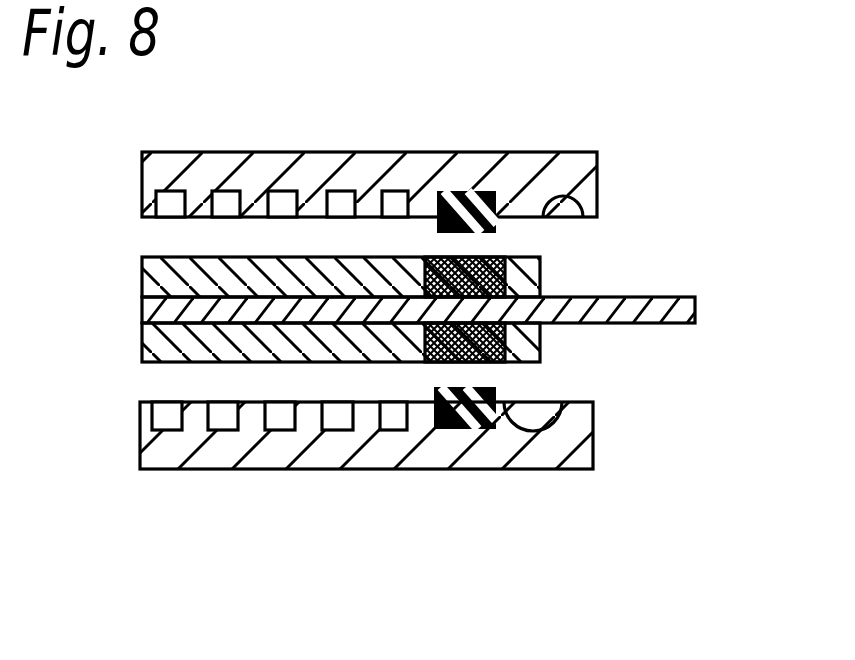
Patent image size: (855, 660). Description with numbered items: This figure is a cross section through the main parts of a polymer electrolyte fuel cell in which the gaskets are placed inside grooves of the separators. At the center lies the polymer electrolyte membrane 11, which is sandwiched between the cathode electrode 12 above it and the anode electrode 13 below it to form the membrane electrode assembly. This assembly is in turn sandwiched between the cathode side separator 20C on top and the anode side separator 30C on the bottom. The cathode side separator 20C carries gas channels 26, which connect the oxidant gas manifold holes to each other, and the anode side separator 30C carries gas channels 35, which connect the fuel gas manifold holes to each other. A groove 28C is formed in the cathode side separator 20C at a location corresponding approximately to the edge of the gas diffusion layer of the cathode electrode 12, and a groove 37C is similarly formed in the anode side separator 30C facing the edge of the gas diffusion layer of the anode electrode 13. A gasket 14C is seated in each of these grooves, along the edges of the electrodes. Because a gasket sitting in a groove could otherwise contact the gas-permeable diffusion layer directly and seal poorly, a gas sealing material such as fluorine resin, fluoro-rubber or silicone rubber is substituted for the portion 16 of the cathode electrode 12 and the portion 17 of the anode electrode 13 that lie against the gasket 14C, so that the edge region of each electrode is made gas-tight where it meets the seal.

The polymer electrolyte membrane 11 is at (665, 300).
The cathode electrode 12 is at (330, 258).
The anode electrode 13 is at (325, 352).
The gasket 14C is at (469, 196).
The portion of the cathode electrode substituted by gas sealing material 16 is at (541, 272).
The portion of the anode electrode substituted by gas sealing material 17 is at (540, 343).
The cathode side separator 20C is at (422, 145).
The gas channels 26 is at (226, 204).
The groove 28C is at (546, 201).
The anode side separator 30C is at (366, 476).
The gas channels 35 is at (224, 418).
The groove 37C is at (537, 418).